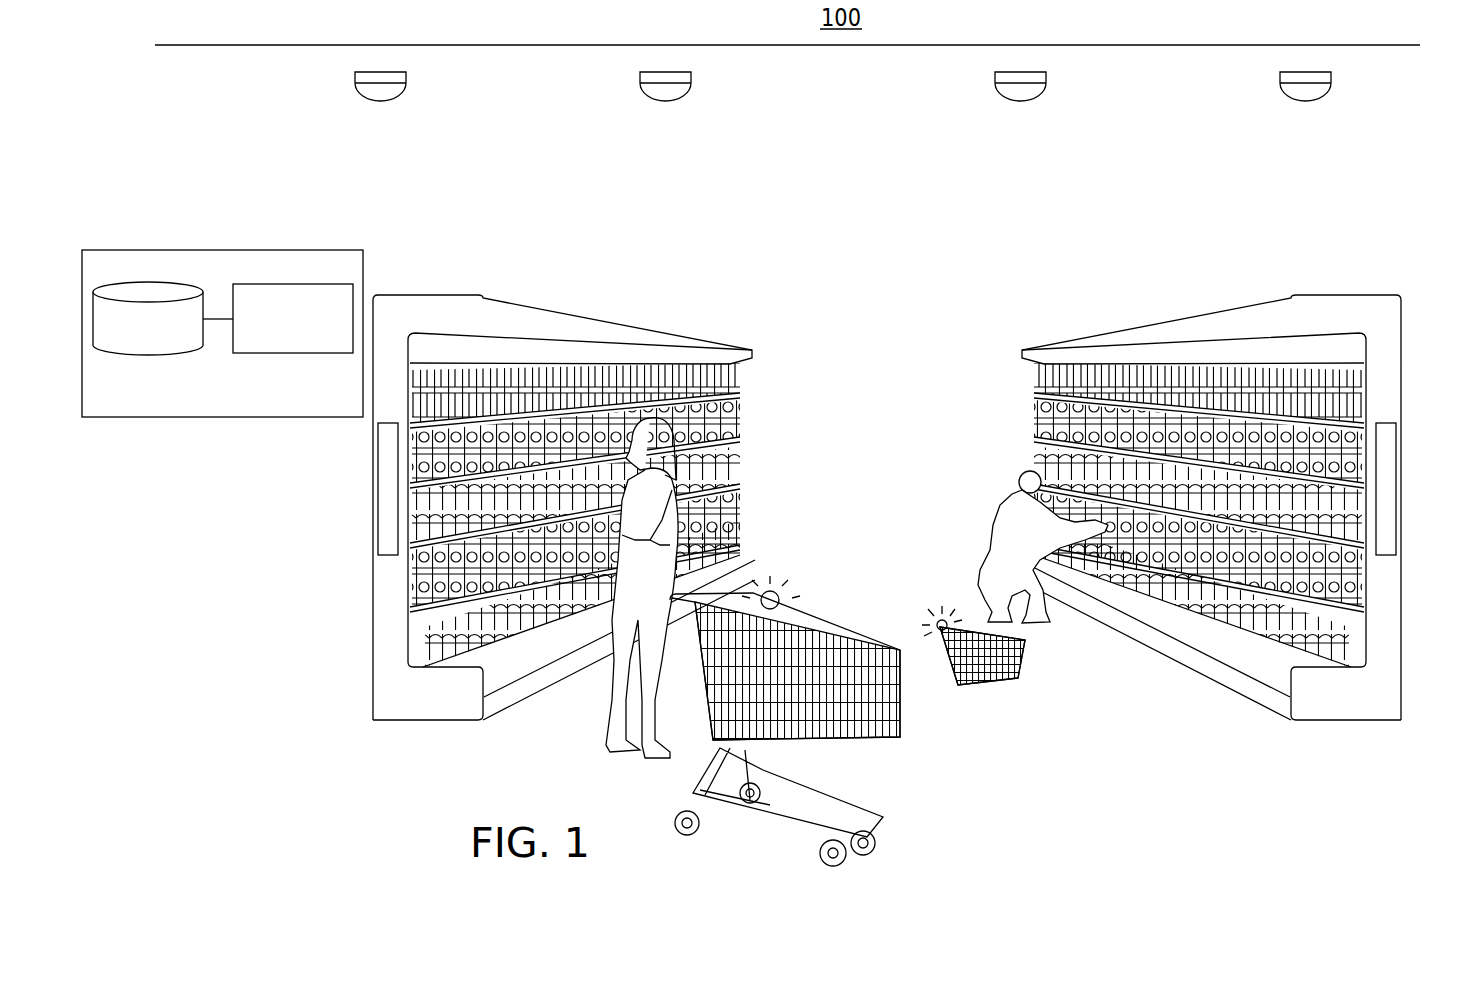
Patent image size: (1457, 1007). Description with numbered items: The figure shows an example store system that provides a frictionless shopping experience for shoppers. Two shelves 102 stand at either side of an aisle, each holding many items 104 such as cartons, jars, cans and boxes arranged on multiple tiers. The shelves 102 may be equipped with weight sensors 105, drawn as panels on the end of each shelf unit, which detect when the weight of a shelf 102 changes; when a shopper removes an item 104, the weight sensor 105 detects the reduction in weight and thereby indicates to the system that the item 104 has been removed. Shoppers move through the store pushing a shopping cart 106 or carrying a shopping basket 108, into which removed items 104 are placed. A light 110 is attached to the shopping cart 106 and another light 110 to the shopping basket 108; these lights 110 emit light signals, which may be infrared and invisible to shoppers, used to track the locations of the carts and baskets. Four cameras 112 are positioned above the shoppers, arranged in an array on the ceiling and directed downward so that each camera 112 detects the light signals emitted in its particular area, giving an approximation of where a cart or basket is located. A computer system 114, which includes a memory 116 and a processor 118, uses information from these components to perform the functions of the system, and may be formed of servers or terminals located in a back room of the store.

The shelves 102 is at (660, 333).
The items 104 is at (580, 392).
The weight sensors 105 is at (385, 500).
The shopping cart 106 is at (902, 705).
The shopping basket 108 is at (1022, 660).
The light 110 is at (795, 592).
The cameras 112 is at (368, 96).
The computer system 114 is at (233, 316).
The memory 116 is at (150, 362).
The processor 118 is at (285, 353).